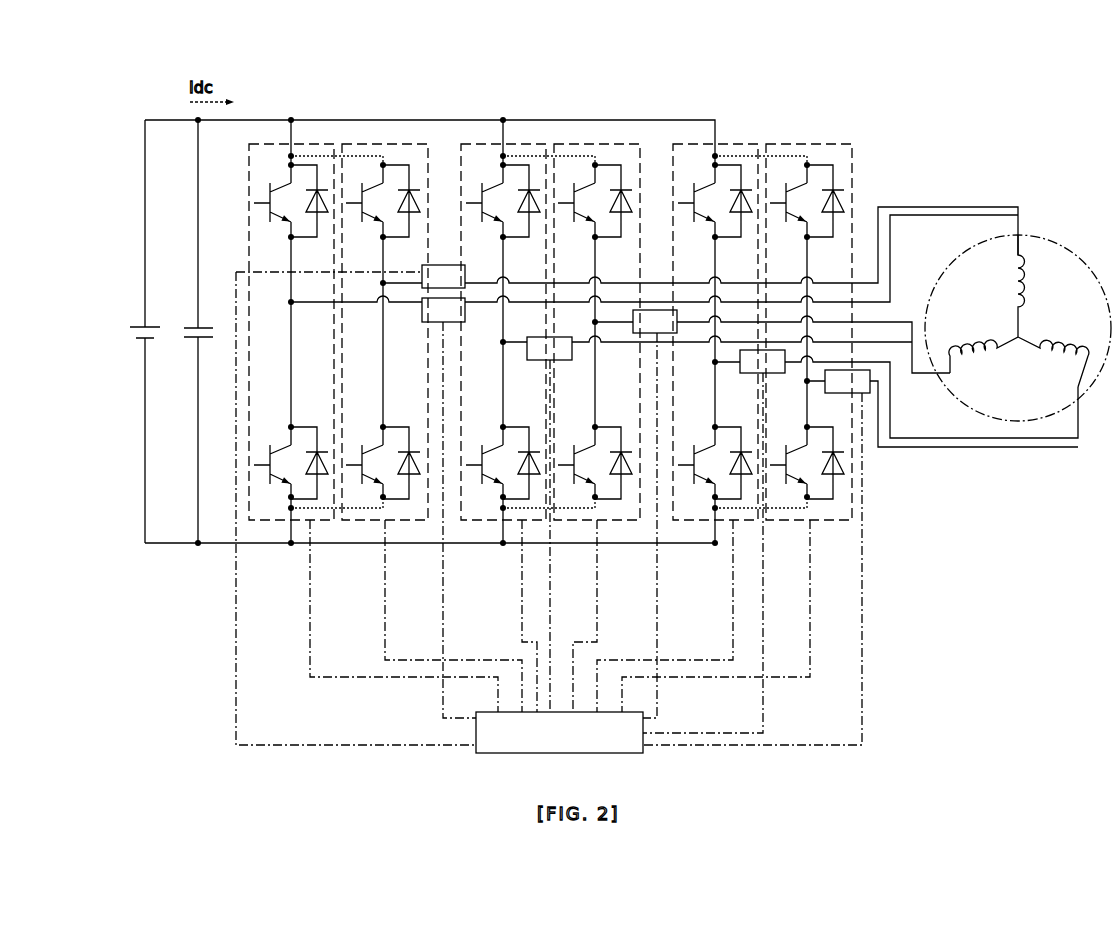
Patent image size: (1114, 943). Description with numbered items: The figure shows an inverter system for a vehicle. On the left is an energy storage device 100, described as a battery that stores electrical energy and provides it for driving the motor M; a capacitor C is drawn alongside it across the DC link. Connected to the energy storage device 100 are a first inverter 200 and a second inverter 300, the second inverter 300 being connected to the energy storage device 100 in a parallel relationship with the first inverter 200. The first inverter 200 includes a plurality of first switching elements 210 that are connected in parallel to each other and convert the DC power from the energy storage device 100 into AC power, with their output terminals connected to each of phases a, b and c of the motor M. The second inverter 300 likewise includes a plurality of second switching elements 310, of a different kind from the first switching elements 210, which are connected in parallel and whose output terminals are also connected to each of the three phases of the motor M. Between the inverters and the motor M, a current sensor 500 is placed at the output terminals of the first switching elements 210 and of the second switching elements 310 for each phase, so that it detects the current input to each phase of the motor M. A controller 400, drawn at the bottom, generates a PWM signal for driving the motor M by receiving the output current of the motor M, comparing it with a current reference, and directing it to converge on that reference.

The energy storage device 100 is at (140, 320).
The first inverter 200 is at (262, 144).
The first switching element 210 is at (312, 165).
The second inverter 300 is at (354, 144).
The second switching element 310 is at (406, 165).
The controller 400 is at (559, 732).
The current sensor 500 is at (646, 329).
The capacitor C is at (199, 331).
The motor M is at (1063, 248).